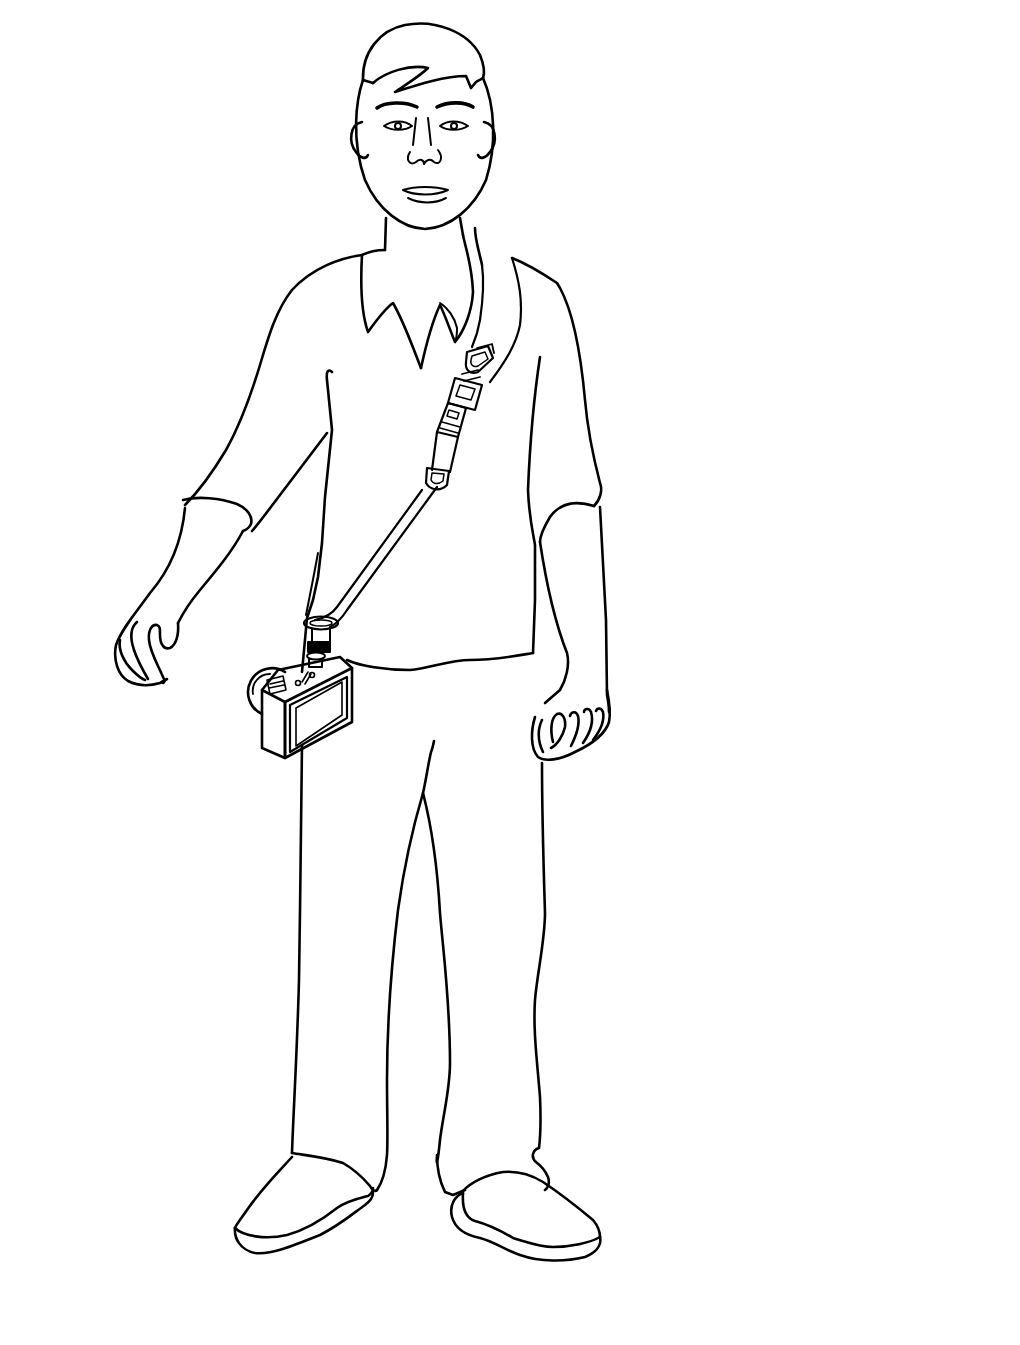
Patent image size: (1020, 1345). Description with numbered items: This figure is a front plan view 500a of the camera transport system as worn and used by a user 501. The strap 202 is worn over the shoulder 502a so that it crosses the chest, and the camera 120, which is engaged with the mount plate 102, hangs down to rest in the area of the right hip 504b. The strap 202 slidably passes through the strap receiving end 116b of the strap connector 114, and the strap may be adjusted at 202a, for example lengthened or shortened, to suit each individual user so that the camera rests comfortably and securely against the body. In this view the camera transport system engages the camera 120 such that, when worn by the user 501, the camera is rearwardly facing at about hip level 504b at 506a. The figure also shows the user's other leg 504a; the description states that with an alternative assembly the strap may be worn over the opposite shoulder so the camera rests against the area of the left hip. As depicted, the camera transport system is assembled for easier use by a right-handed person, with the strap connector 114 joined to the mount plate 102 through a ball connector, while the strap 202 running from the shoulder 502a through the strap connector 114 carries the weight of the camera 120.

The front plan view 500a is at (133, 80).
The user 501 is at (308, 193).
The strap 202 is at (510, 257).
The shoulder 502a is at (562, 274).
The strap adjustment 202a is at (474, 423).
The strap receiving end 116b is at (300, 616).
The strap connector 114 is at (352, 640).
The mount plate 102 is at (262, 676).
The camera 120 is at (260, 723).
The rearwardly facing position 506a is at (260, 751).
The right hip 504b is at (282, 810).
The right leg 504a is at (550, 796).